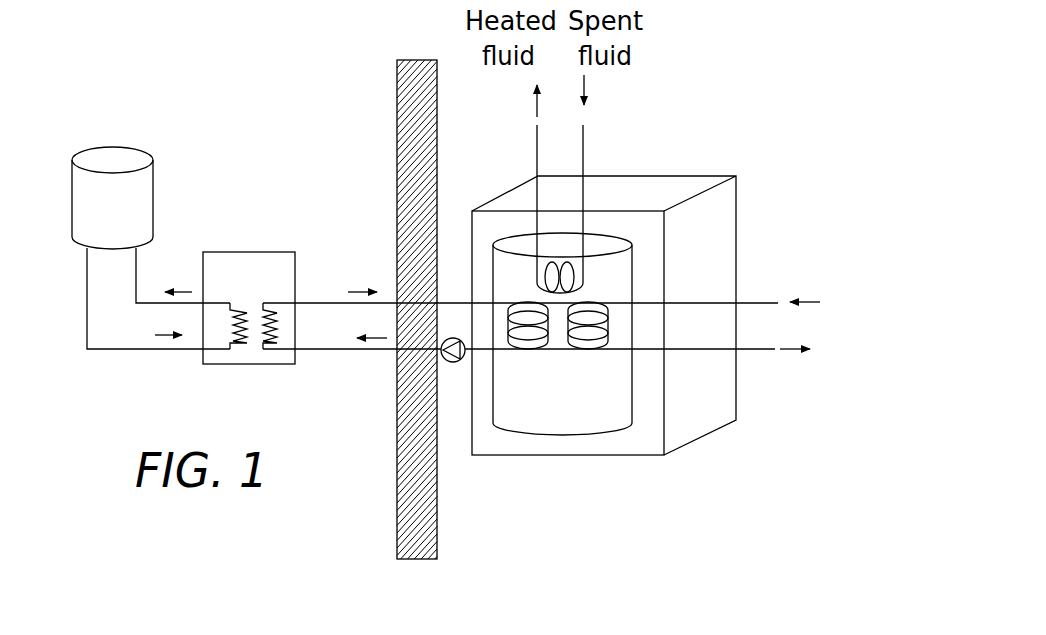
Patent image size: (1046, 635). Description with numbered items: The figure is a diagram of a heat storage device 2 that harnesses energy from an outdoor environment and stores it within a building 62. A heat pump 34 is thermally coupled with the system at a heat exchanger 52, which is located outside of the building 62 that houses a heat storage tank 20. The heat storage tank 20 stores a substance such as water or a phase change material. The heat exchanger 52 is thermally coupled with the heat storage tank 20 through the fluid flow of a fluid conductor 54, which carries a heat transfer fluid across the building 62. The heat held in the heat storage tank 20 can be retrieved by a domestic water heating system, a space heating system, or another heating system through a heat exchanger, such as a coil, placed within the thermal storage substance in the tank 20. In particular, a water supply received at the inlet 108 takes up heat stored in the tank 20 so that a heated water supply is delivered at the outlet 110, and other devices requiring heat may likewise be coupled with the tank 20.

The heat storage device 2 is at (757, 420).
The heat storage tank 20 is at (612, 421).
The heat pump 34 is at (75, 192).
The heat exchanger 52 is at (232, 366).
The fluid conductor 54 is at (365, 351).
The building 62 is at (397, 112).
The inlet 108 is at (750, 302).
The outlet 110 is at (752, 351).